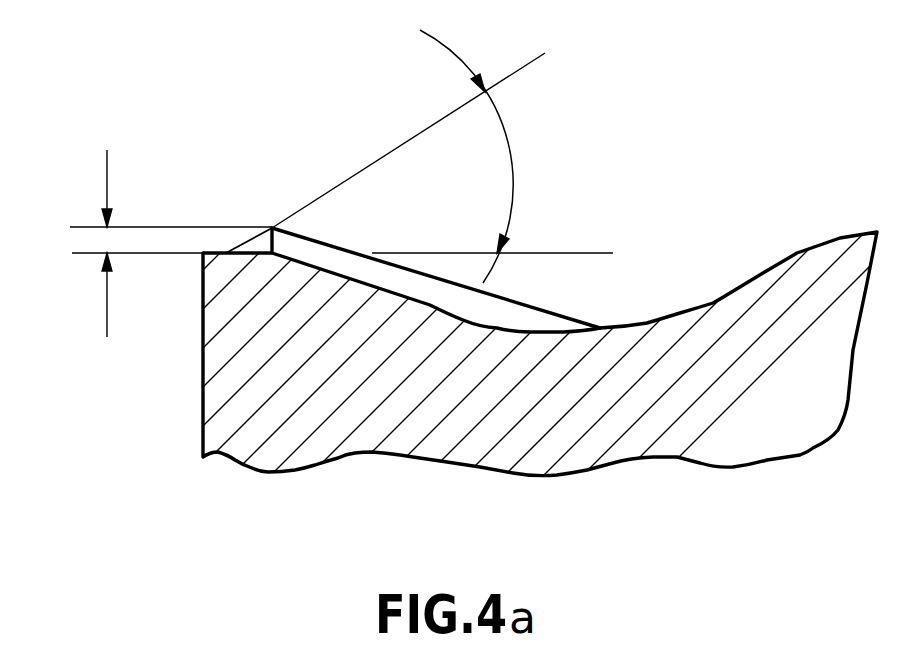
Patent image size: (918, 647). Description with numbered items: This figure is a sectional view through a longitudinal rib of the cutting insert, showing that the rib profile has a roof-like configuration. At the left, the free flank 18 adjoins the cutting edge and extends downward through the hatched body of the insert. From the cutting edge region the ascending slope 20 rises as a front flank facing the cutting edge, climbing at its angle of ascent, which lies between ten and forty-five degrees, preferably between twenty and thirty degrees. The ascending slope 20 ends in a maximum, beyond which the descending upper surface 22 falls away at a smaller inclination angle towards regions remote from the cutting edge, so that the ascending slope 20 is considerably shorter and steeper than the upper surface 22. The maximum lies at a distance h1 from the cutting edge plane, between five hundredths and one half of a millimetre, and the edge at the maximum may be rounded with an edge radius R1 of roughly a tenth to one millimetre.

The free flank 18 is at (203, 392).
The ascending slope 20 is at (243, 243).
The descending upper surface 22 is at (558, 313).
The tip radius R1 is at (274, 210).
The distance of the maximum from the cutting edge h1 is at (103, 243).